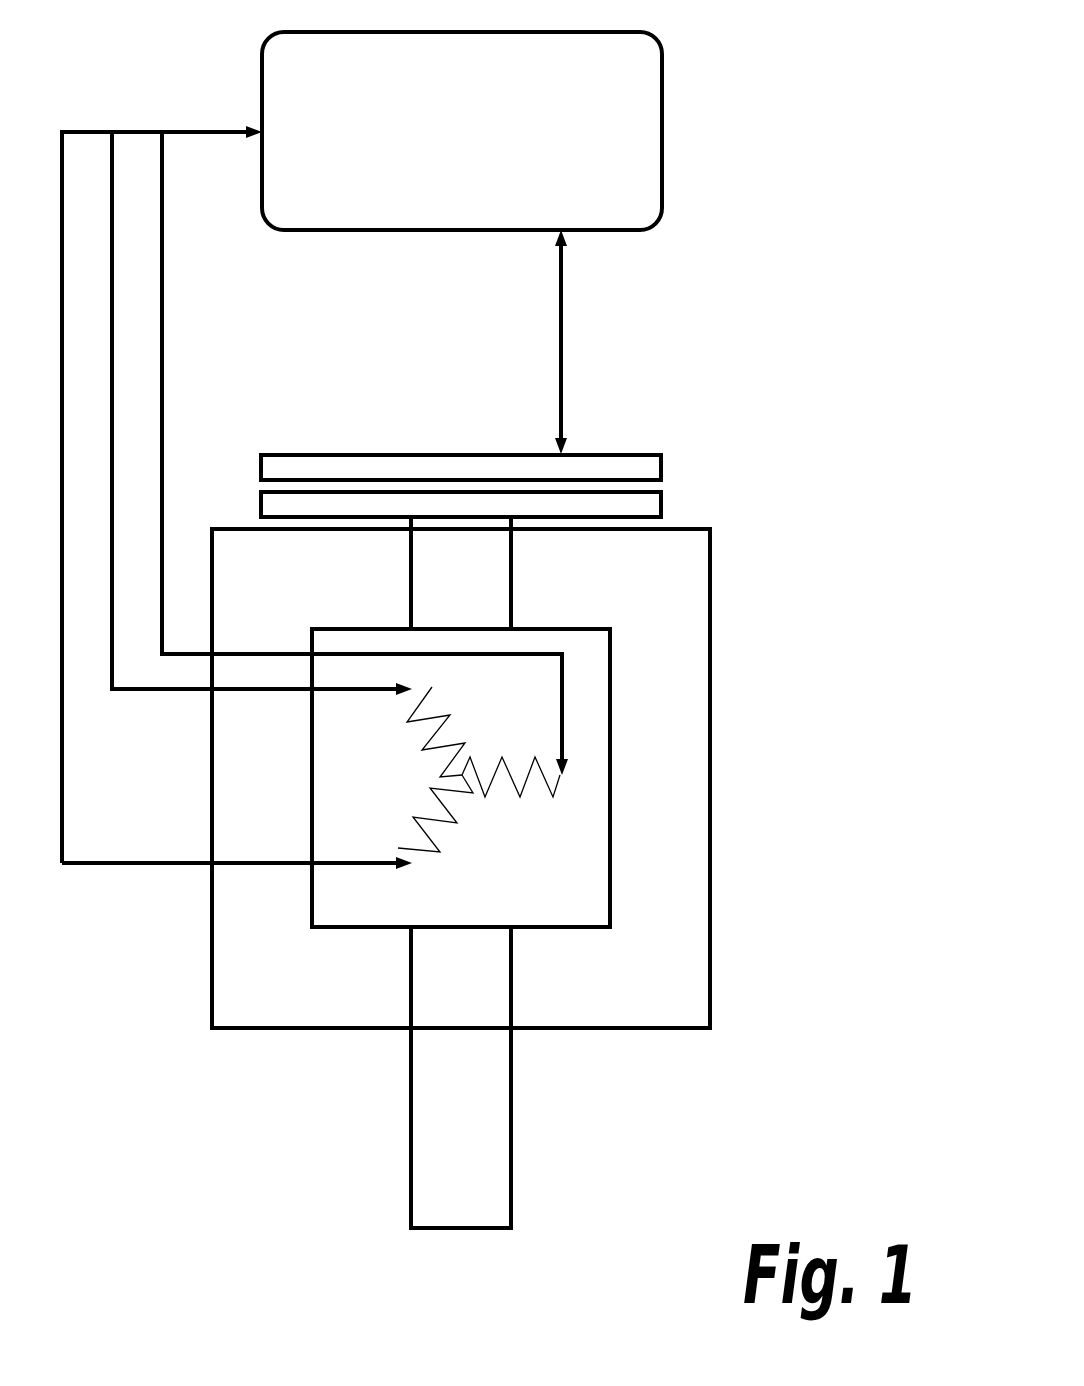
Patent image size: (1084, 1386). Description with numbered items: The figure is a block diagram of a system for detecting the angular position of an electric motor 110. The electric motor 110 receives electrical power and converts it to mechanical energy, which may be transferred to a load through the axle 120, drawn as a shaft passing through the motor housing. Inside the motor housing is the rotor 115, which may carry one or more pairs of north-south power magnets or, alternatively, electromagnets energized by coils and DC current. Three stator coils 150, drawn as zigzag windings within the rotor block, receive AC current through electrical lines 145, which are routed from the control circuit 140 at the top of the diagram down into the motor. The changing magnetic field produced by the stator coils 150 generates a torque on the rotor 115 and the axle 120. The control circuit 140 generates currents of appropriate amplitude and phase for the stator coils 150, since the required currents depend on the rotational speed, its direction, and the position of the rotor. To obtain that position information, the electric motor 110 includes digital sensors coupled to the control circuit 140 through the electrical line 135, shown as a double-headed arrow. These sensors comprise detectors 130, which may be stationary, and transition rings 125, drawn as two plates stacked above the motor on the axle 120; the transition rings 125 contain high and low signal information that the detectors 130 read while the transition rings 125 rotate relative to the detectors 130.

The electric motor 110 is at (633, 1018).
The rotor 115 is at (572, 914).
The axle 120 is at (539, 872).
The transition rings 125 is at (539, 457).
The detectors 130 is at (514, 407).
The electrical line 135 is at (636, 342).
The control circuit 140 is at (485, 166).
The electrical lines 145 is at (313, 441).
The stator coils 150 is at (638, 743).